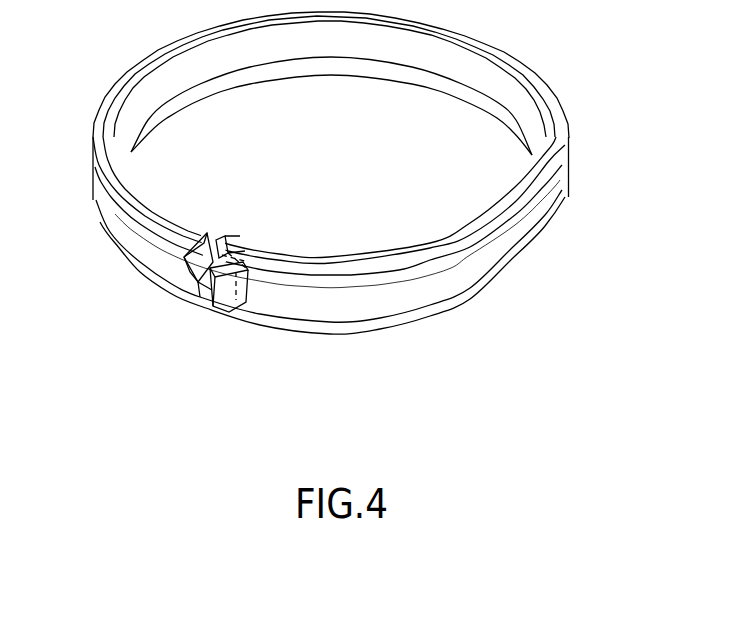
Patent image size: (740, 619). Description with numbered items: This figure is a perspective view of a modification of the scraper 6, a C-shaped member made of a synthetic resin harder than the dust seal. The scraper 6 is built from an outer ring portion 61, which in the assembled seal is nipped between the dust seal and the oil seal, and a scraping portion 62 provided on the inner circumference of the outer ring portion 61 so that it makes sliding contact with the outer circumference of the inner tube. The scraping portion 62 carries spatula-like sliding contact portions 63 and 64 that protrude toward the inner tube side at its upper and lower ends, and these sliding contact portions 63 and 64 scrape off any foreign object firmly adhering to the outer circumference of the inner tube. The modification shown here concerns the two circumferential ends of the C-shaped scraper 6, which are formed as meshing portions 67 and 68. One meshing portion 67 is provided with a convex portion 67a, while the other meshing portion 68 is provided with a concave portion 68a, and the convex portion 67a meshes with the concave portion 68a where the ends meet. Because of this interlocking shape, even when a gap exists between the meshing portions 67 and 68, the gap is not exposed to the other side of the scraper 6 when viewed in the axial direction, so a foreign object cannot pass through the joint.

The scraper 6 is at (116, 88).
The outer ring portion 61 is at (554, 218).
The scraping portion 62 is at (429, 240).
The sliding contact portion 63 is at (193, 230).
The sliding contact portion 64 is at (307, 50).
The meshing portion 67 is at (186, 262).
The convex portion 67a is at (197, 312).
The meshing portion 68 is at (230, 248).
The concave portion 68a is at (229, 310).